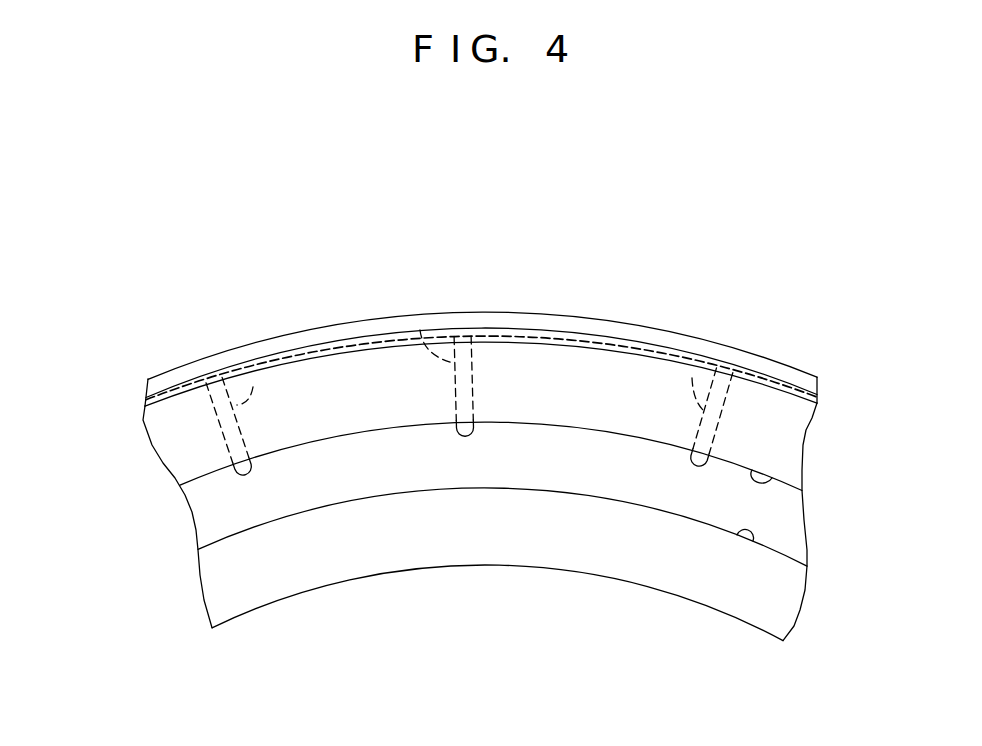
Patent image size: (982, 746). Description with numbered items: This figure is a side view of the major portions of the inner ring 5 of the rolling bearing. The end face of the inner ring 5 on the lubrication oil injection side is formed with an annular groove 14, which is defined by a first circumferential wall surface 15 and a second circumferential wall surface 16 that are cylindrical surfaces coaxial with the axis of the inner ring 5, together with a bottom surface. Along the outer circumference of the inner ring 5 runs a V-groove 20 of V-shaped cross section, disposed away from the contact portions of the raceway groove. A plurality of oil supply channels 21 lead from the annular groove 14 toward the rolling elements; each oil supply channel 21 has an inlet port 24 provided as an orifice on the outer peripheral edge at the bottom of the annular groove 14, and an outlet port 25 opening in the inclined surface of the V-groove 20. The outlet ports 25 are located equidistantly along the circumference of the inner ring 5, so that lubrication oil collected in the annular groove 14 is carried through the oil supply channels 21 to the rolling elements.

The inner ring 5 is at (133, 373).
The annular groove 14 is at (590, 480).
The first circumferential wall surface 15 is at (762, 486).
The second circumferential wall surface 16 is at (753, 540).
The V-groove 20 is at (583, 323).
The oil supply channel 21 is at (253, 387).
The inlet port 24 is at (241, 474).
The outlet port 25 is at (206, 383).